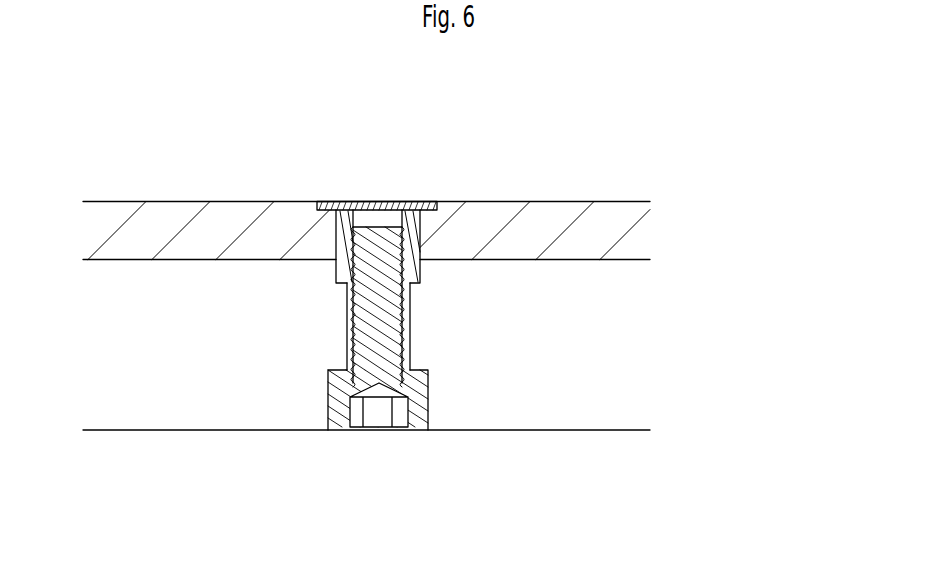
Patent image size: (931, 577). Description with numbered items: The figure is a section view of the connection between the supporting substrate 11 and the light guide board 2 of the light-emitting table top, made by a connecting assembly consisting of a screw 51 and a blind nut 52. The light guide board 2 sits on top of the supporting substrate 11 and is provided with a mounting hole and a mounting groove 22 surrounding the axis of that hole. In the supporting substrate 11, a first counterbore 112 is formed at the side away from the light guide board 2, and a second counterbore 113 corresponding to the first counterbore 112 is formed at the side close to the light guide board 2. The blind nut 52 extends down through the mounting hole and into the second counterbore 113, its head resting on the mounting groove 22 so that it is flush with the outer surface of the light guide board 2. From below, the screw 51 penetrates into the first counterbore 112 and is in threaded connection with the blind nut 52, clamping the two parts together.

The light guide board 2 is at (545, 243).
The supporting substrate 11 is at (542, 377).
The mounting groove 22 is at (433, 203).
The blind nut 52 is at (357, 200).
The screw 51 is at (383, 417).
The first counterbore 112 is at (332, 412).
The second counterbore 113 is at (420, 283).